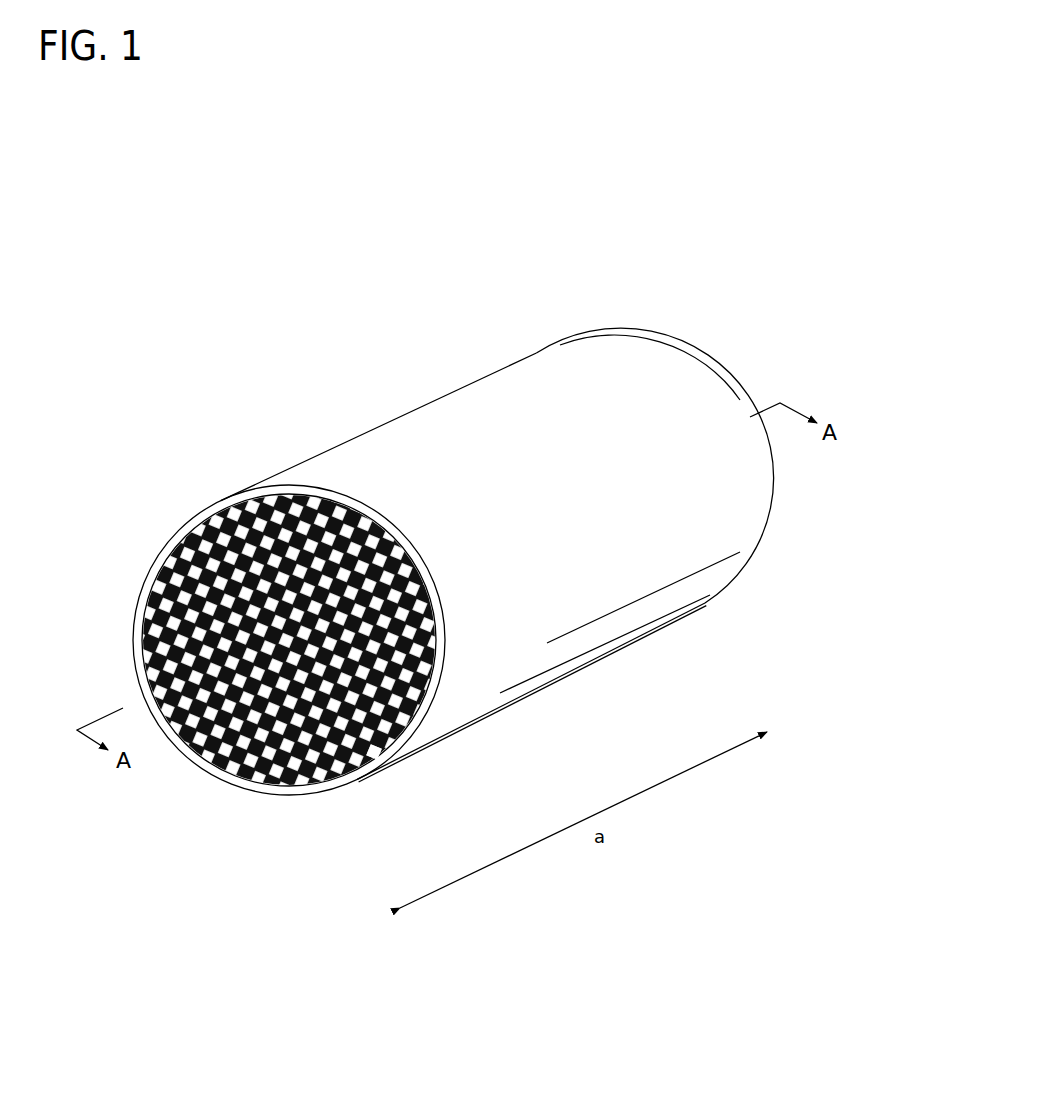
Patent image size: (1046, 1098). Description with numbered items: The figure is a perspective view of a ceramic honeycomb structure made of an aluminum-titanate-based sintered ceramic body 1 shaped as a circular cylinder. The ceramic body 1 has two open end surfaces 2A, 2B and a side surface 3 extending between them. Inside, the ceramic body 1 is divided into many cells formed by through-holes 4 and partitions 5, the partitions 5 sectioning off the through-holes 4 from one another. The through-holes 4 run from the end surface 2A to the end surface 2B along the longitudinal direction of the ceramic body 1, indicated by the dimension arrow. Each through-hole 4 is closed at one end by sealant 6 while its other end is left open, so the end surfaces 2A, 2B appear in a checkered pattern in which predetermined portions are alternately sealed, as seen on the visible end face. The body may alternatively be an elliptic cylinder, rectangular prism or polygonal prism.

The ceramic body 1 is at (573, 288).
The end surface 2A is at (148, 560).
The end surface 2B is at (708, 363).
The side surface 3 is at (568, 645).
The through-holes 4 is at (267, 773).
The partitions 5 is at (203, 757).
The sealant 6 is at (372, 752).